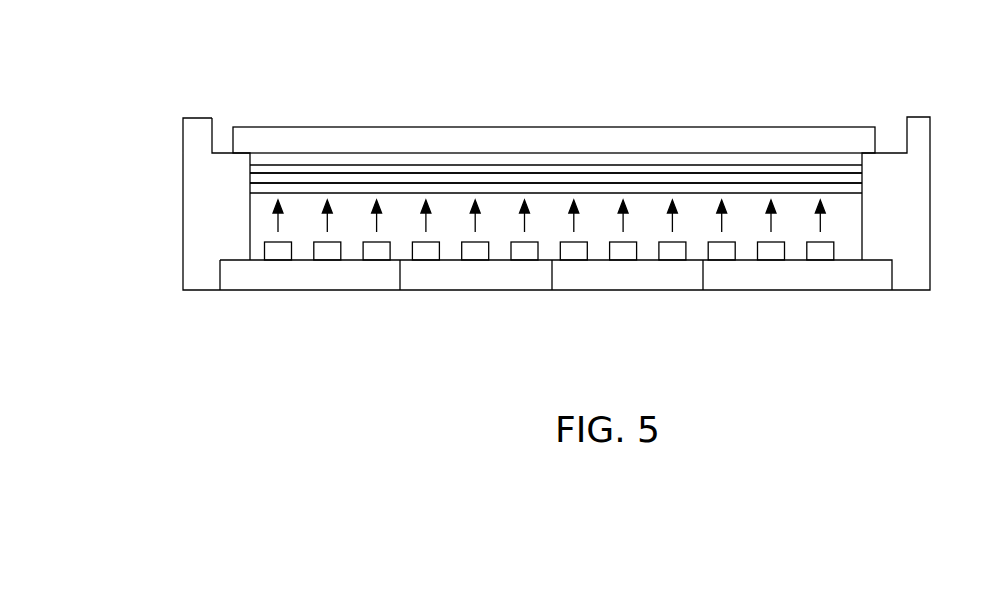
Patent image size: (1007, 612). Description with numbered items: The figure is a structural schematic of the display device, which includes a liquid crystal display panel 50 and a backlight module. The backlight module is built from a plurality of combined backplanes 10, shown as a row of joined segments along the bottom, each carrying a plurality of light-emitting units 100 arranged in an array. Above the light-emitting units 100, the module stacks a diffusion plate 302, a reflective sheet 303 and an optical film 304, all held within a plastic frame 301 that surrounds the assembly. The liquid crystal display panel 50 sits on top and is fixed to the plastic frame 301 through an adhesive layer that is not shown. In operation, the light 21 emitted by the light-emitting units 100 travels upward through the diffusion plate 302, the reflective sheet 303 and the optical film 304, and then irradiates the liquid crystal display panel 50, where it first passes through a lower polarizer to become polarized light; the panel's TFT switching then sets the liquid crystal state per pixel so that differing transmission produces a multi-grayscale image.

The backplane 10 is at (292, 280).
The light-emitting unit 100 is at (377, 252).
The light 21 is at (820, 226).
The liquid crystal display panel 50 is at (515, 140).
The plastic frame 301 is at (912, 188).
The diffusion plate 302 is at (742, 193).
The reflective sheet 303 is at (662, 180).
The optical film 304 is at (600, 170).